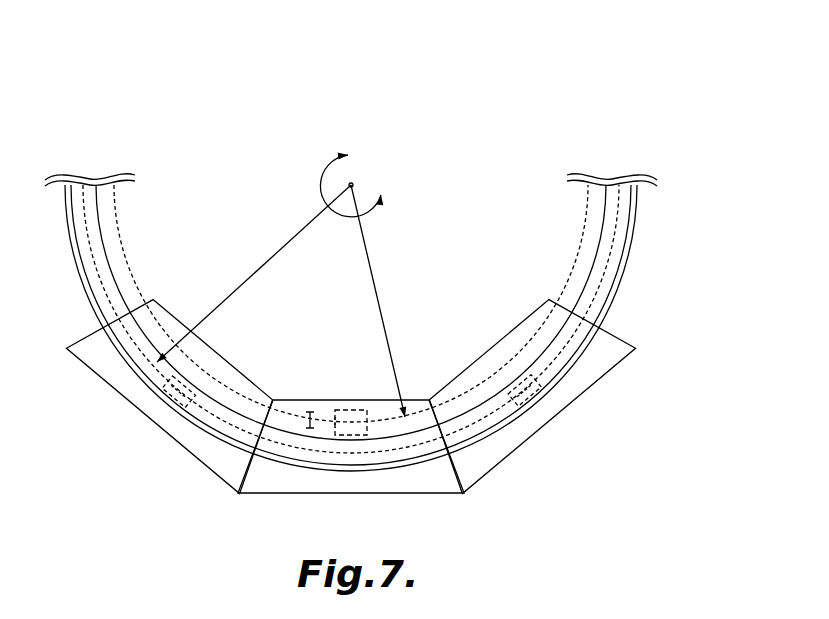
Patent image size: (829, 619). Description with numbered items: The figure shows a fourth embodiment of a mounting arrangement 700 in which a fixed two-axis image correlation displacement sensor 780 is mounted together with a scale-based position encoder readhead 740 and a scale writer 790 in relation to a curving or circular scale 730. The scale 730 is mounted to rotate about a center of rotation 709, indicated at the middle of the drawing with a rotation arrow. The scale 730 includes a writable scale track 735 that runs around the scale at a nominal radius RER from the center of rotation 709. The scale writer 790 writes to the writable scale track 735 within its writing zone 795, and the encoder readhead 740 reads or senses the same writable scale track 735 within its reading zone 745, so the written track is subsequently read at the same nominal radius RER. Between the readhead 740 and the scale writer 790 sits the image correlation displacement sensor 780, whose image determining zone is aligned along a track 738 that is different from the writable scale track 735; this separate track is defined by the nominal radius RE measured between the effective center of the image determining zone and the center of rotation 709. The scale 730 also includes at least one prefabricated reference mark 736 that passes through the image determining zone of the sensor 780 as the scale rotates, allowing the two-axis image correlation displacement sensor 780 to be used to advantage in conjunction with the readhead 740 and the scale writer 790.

The mounting arrangement 700 is at (682, 107).
The center of rotation 709 is at (353, 184).
The curving or circular scale 730 is at (618, 297).
The writable scale track 735 is at (610, 242).
The track 738 is at (585, 231).
The prefabricated reference mark 736 is at (306, 418).
The scale-based position encoder readhead 740 is at (158, 423).
The reading zone 745 is at (167, 381).
The fixed 2-axis image correlation displacement sensor 780 is at (364, 493).
The scale writer 790 is at (552, 420).
The writing zone 795 is at (548, 382).
The nominal radius of the writable scale track RER is at (285, 244).
The nominal radius of the image determining zone track RE is at (378, 290).